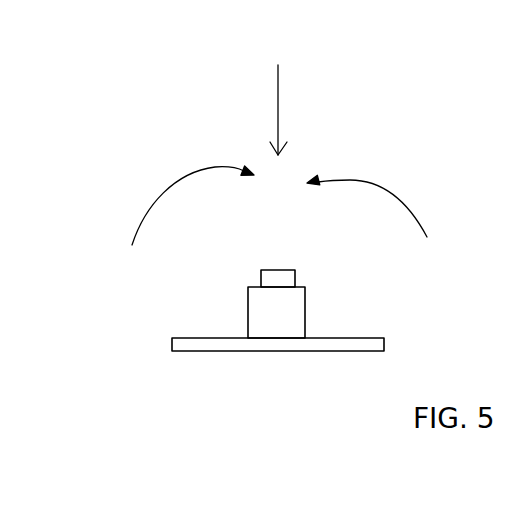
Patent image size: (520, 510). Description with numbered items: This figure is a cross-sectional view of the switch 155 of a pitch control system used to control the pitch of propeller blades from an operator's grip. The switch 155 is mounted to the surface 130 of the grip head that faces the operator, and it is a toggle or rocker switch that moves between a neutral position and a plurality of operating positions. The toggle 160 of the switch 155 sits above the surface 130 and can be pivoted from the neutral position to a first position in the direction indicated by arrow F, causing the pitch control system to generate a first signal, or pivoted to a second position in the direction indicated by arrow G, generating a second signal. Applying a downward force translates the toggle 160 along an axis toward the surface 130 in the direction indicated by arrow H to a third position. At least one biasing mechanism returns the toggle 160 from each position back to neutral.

The surface 130 is at (176, 338).
The switch 155 is at (203, 287).
The toggle 160 is at (282, 268).
The arrow H is at (278, 98).
The arrow G is at (193, 205).
The arrow F is at (367, 202).